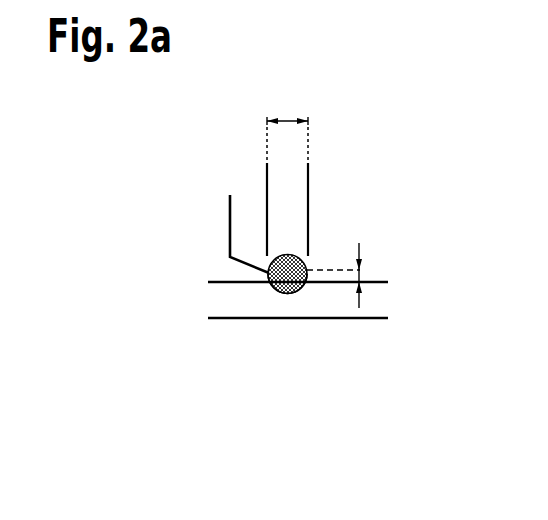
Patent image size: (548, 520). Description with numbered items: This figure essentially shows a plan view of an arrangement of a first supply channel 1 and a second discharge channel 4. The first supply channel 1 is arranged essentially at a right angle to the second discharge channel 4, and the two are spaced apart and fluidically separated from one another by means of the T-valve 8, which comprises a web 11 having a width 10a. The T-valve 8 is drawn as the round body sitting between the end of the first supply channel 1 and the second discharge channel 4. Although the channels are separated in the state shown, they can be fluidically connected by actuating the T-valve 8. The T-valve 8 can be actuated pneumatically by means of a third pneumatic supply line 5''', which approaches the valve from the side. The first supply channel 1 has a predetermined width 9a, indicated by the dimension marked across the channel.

The first supply channel 1 is at (302, 213).
The width of the first supply channel 9a is at (285, 118).
The third pneumatic supply line 5''' is at (219, 219).
The second discharge channel 4 is at (205, 297).
The width of the web 10a is at (361, 272).
The T-valve 8 is at (289, 283).
The web 11 is at (264, 296).